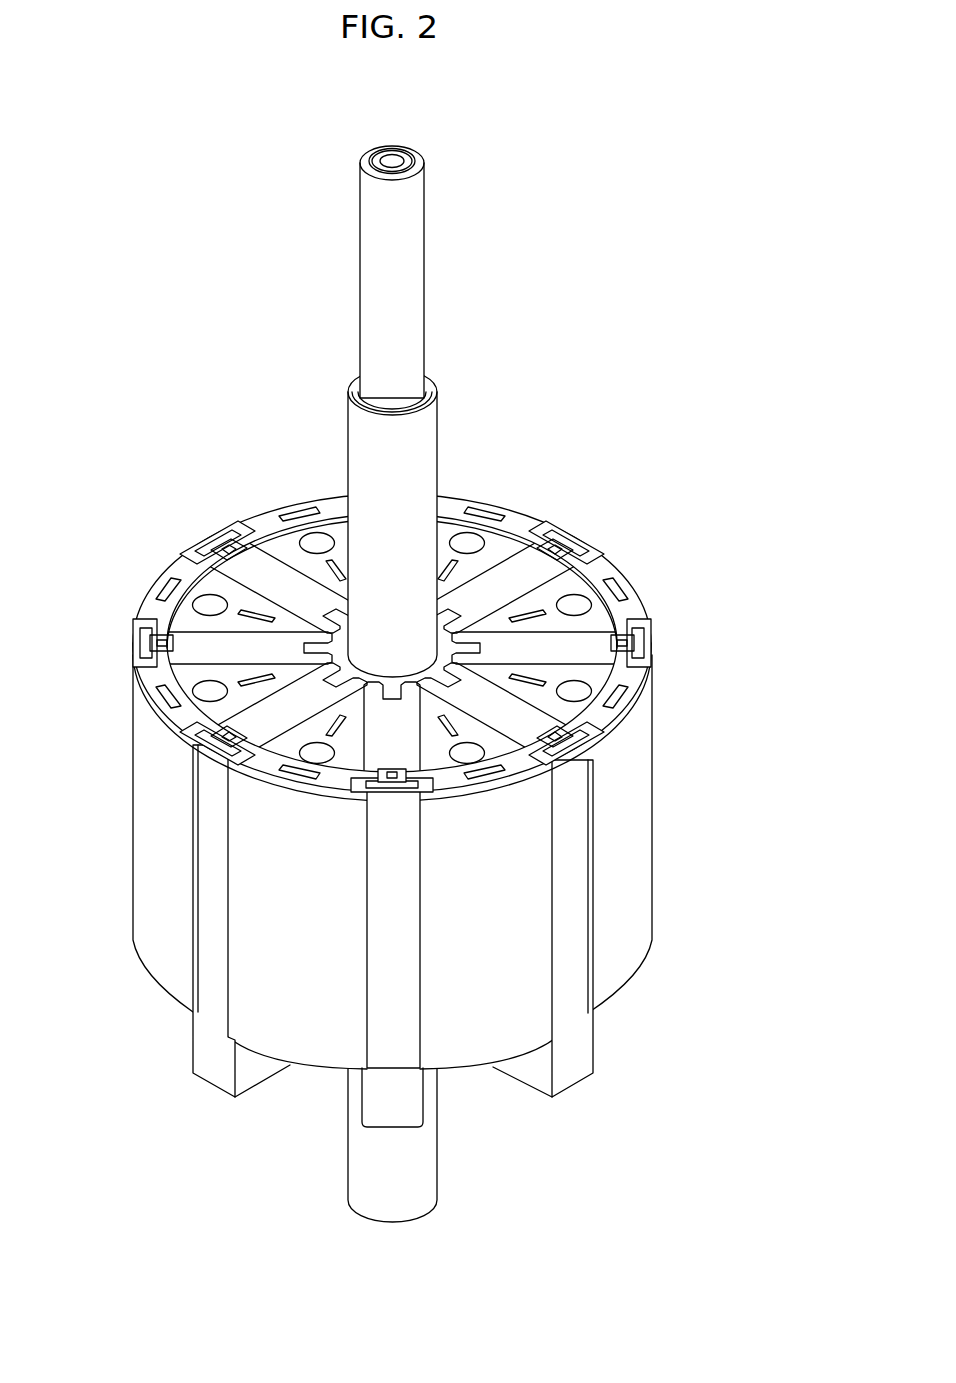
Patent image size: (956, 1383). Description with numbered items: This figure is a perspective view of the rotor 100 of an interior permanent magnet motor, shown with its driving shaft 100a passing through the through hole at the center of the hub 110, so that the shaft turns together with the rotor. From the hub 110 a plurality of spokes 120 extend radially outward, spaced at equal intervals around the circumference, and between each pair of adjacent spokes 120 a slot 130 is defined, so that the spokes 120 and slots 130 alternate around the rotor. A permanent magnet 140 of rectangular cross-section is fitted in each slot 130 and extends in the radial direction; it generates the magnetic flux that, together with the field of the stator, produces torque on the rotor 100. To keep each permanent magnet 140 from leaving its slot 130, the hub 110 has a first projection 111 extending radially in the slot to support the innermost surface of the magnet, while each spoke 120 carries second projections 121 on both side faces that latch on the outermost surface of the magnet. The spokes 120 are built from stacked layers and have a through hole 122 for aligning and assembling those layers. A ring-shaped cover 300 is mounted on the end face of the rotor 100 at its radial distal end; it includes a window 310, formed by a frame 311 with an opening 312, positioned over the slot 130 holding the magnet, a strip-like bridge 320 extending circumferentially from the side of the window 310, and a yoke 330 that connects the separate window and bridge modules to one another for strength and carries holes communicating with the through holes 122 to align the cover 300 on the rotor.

The rotor 100 is at (166, 381).
The driving shaft 100a is at (415, 439).
The hub 110 is at (575, 557).
The first projection 111 is at (398, 692).
The spoke 120 is at (498, 543).
The second projection 121 is at (420, 795).
The through hole 122 is at (312, 760).
The slot 130 is at (520, 592).
The permanent magnet 140 is at (587, 610).
The cover 300 is at (112, 690).
The window 310 is at (638, 645).
The frame 311 is at (227, 753).
The opening 312 is at (193, 737).
The bridge 320 is at (580, 737).
The yoke 330 is at (500, 780).